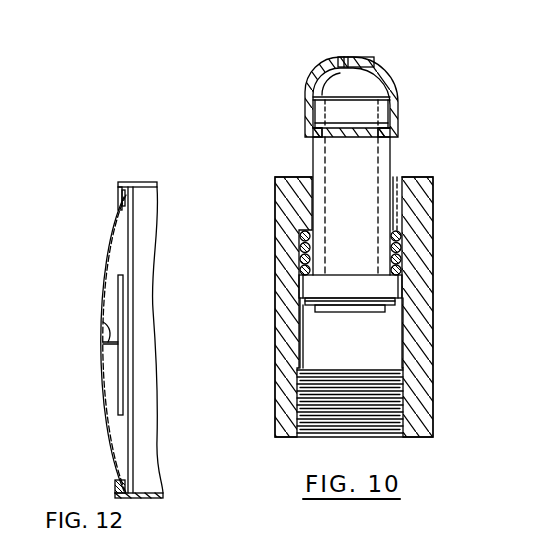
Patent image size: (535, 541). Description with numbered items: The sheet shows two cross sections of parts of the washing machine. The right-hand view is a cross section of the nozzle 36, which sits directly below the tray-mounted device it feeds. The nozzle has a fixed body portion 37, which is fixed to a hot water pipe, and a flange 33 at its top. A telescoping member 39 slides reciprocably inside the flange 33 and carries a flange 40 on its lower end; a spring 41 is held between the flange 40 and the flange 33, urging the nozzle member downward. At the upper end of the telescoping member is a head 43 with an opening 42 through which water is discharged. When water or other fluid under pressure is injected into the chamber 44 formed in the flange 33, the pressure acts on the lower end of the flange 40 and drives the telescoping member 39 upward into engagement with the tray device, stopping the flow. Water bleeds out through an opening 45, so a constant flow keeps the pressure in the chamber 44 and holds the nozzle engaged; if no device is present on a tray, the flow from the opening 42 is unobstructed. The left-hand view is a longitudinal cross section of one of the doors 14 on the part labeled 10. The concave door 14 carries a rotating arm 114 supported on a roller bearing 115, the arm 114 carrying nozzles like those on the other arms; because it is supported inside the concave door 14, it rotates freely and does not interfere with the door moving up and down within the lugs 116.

In FIG. 12, the panel 10 is at (147, 188).
In FIG. 12, the door 14 is at (104, 348).
In FIG. 12, the arm 114 is at (118, 394).
In FIG. 12, the roller bearing 115 is at (104, 326).
In FIG. 12, the lugs 116 is at (120, 193).
In FIG. 10, the flange 33 is at (310, 198).
In FIG. 10, the nozzle 36 is at (399, 118).
In FIG. 10, the fixed body portion 37 is at (422, 356).
In FIG. 10, the telescoping member 39 is at (392, 166).
In FIG. 10, the flange 40 is at (401, 290).
In FIG. 10, the spring 41 is at (400, 251).
In FIG. 10, the opening 42 is at (360, 62).
In FIG. 10, the head 43 is at (399, 82).
In FIG. 10, the chamber 44 is at (320, 343).
In FIG. 10, the opening 45 is at (398, 206).